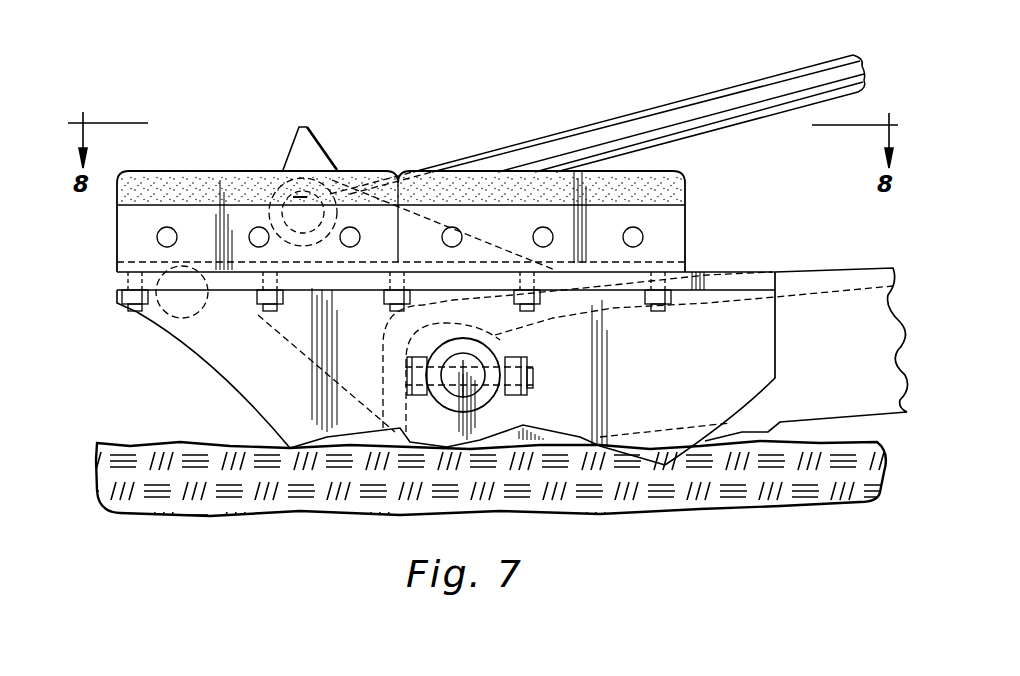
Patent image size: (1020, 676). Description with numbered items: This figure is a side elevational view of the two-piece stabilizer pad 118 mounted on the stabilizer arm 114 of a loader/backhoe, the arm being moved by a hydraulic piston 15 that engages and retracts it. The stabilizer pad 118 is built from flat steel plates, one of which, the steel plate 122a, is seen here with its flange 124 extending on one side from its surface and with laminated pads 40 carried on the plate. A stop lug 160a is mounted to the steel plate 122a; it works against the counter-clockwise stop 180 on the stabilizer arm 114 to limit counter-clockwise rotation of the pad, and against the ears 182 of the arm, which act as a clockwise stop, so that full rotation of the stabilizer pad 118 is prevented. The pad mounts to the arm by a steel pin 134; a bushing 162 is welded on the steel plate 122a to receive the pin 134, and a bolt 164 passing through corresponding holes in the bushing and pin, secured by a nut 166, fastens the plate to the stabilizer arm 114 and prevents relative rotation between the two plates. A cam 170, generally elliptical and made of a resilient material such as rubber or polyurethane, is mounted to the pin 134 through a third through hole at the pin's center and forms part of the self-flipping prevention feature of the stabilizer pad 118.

The hydraulic piston 15 is at (723, 95).
The laminated pad 40 is at (160, 170).
The stabilizer arm 114 is at (826, 272).
The stabilizer pad 118 is at (201, 150).
The steel plate 122a is at (700, 270).
The flange 124 is at (203, 369).
The steel pin 134 is at (487, 396).
The stop lug 160a is at (187, 318).
The bushing 162 is at (406, 400).
The bolt 164 is at (408, 356).
The nut 166 is at (522, 358).
The cam 170 is at (503, 340).
The counter-clockwise stop 180 is at (765, 440).
The ears 182 is at (307, 127).